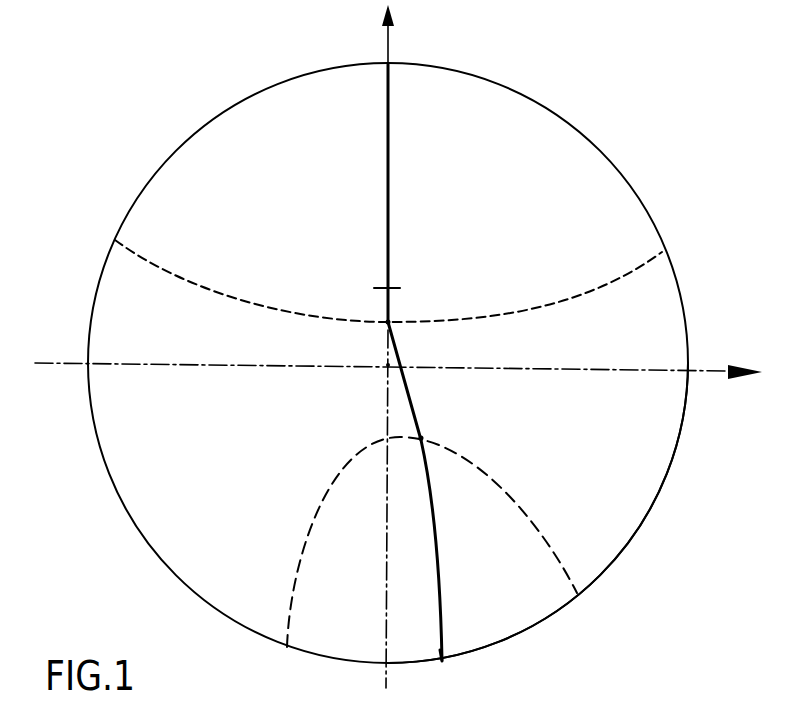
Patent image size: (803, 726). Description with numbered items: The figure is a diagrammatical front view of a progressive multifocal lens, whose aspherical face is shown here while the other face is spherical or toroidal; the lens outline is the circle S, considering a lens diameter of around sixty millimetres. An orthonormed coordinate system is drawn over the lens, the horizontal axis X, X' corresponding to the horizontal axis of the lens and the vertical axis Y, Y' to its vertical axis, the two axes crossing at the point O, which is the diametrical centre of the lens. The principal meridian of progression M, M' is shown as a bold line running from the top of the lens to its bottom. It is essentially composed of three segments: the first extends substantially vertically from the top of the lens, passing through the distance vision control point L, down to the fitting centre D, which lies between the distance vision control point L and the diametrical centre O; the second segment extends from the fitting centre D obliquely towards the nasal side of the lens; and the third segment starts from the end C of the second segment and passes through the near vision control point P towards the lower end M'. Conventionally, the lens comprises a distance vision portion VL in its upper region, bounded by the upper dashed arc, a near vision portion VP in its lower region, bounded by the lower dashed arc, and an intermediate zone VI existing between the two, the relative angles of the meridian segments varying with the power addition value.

The sphere S is at (162, 481).
The intermediate zone VI is at (627, 432).
The x-axis X is at (575, 393).
The x-axis X' is at (208, 385).
The y-axis Y is at (398, 34).
The y-axis Y' is at (400, 519).
The principal meridian of progression M is at (424, 234).
The principal meridian of progression M' is at (482, 670).
The near vision control point P is at (430, 494).
The distance vision portion VL is at (602, 213).
The near vision portion VP is at (523, 577).
The distance vision control point L is at (397, 284).
The fitting centre D is at (390, 320).
The diametrical centre O is at (388, 362).
The end of the second segment C is at (423, 434).